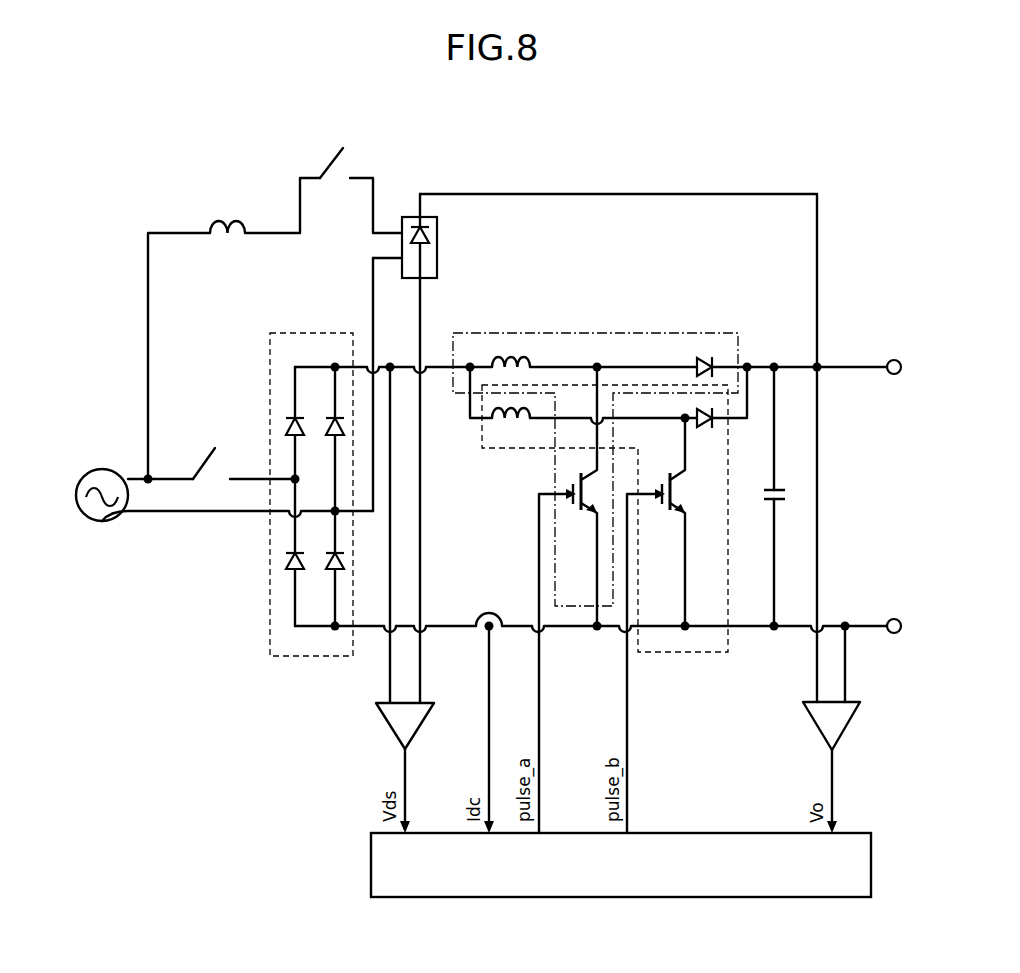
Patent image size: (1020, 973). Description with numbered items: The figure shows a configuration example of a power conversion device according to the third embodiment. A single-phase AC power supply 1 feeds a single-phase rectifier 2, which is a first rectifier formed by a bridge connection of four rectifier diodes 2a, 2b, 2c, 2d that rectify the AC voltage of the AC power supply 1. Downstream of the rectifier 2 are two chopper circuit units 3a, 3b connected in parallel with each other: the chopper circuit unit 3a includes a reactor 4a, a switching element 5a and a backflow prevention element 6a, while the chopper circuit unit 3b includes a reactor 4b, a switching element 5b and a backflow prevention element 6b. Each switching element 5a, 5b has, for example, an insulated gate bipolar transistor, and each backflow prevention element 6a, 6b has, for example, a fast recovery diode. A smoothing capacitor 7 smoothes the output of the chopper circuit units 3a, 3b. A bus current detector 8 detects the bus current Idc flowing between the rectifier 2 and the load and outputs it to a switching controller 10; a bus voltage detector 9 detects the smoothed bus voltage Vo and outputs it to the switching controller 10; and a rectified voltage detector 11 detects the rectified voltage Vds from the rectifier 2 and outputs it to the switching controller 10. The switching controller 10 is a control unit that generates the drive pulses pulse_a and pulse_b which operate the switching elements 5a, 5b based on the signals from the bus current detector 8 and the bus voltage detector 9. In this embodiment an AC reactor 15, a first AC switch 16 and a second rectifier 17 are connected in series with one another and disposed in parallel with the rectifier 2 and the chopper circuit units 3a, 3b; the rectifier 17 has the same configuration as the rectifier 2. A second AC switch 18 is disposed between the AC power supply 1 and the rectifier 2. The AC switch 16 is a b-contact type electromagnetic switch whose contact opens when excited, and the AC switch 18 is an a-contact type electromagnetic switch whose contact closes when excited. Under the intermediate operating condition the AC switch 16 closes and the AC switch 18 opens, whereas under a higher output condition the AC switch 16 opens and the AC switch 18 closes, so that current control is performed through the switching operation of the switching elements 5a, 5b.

The single-phase AC power supply 1 is at (104, 470).
The single-phase rectifier 2 is at (270, 350).
The rectifier diode 2a is at (292, 416).
The rectifier diode 2b is at (332, 416).
The rectifier diode 2c is at (292, 574).
The rectifier diode 2d is at (332, 574).
The chopper circuit unit 3a is at (587, 331).
The chopper circuit unit 3b is at (687, 654).
The reactor 4a is at (518, 353).
The reactor 4b is at (510, 432).
The switching element 5a is at (576, 500).
The switching element 5b is at (678, 488).
The backflow prevention element 6a is at (706, 355).
The backflow prevention element 6b is at (700, 410).
The smoothing capacitor 7 is at (781, 489).
The bus current detector 8 is at (489, 607).
The bus voltage detector 9 is at (811, 720).
The switching controller 10 is at (703, 833).
The rectified voltage detector 11 is at (384, 718).
The AC reactor 15 is at (226, 217).
The AC switch 16 is at (329, 166).
The rectifier 17 is at (438, 240).
The AC switch 18 is at (199, 466).